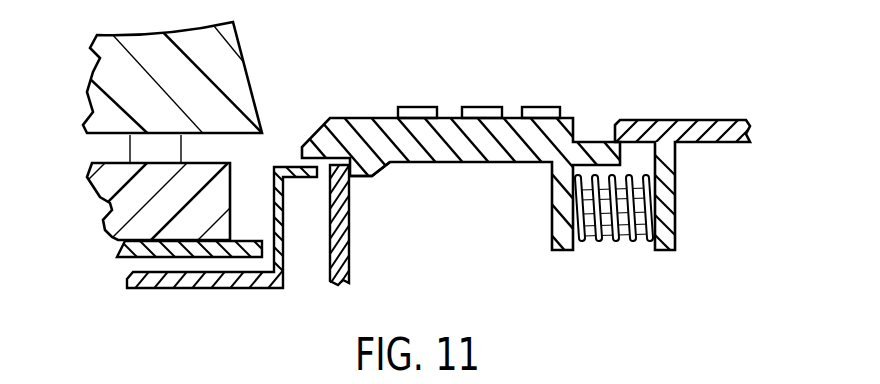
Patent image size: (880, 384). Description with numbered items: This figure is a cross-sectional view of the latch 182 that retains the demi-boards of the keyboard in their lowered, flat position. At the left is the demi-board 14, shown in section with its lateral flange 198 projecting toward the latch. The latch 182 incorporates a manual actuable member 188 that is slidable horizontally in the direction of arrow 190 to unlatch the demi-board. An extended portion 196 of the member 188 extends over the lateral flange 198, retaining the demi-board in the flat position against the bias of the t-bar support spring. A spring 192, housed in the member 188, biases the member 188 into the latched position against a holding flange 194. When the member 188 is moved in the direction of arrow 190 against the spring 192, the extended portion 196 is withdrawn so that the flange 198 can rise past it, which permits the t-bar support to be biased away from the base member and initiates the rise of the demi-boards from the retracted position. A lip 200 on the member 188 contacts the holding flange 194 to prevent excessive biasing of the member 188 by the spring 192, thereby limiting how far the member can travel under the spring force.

The right demi-board 14 is at (280, 164).
The latch 182 is at (587, 70).
The manual actuable member 188 is at (357, 118).
The arrow 190 is at (506, 67).
The spring 192 is at (615, 242).
The holding flange 194 is at (352, 238).
The extended portion 196 is at (313, 137).
The lateral flange 198 is at (305, 180).
The lip 200 is at (373, 172).